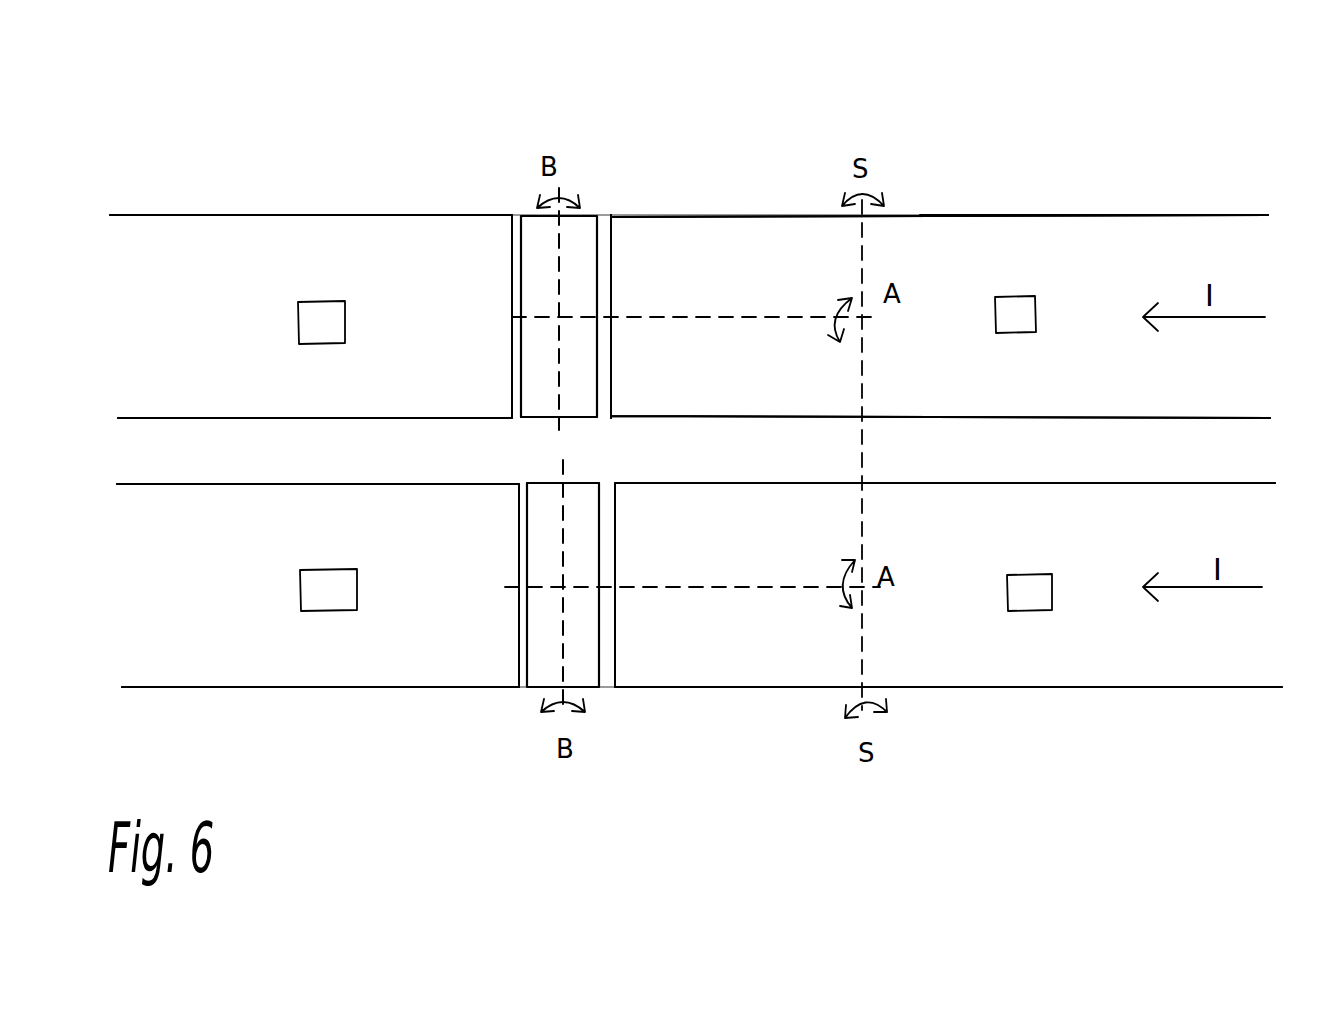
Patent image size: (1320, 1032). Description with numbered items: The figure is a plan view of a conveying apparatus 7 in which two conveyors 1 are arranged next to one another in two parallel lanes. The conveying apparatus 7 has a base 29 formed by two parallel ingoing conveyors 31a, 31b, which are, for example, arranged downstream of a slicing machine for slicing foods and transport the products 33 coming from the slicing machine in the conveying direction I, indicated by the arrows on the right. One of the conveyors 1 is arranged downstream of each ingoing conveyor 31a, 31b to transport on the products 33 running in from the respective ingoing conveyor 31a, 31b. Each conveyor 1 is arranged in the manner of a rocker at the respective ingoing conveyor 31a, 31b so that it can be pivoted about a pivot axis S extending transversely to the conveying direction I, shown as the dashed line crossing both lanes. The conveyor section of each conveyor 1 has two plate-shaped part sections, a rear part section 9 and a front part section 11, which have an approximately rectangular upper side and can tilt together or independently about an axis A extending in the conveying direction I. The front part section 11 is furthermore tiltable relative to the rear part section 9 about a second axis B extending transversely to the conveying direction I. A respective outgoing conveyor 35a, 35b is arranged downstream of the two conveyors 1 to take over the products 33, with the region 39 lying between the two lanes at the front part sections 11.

The conveyor 1 is at (719, 194).
The conveying apparatus 7 is at (1215, 121).
The rear part section 9 is at (790, 264).
The front part section 11 is at (590, 262).
The base 29 is at (960, 165).
The ingoing conveyor 31a is at (1100, 263).
The ingoing conveyor 31b is at (1100, 535).
The products 33 is at (345, 325).
The outgoing conveyor 35a is at (420, 266).
The outgoing conveyor 35b is at (415, 527).
The gap between conveyors 39 is at (590, 468).